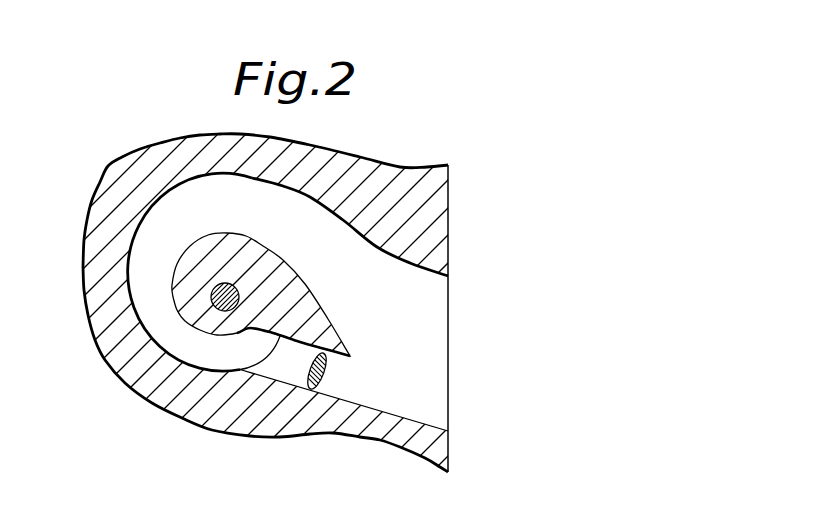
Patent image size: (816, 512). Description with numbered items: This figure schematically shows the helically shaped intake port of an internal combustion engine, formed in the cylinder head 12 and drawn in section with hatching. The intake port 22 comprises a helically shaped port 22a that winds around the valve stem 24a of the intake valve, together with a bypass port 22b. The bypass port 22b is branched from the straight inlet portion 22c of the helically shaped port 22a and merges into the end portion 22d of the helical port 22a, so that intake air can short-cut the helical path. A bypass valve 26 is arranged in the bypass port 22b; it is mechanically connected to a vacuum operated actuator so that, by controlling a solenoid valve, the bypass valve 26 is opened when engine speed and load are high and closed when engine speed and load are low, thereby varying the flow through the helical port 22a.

The cylinder head 12 is at (427, 211).
The intake port 22 is at (432, 316).
The helically shaped port 22a is at (235, 221).
The bypass port 22b is at (303, 377).
The straight inlet portion 22c is at (415, 329).
The end portion 22d is at (237, 352).
The valve stem 24a is at (238, 289).
The bypass valve 26 is at (328, 372).